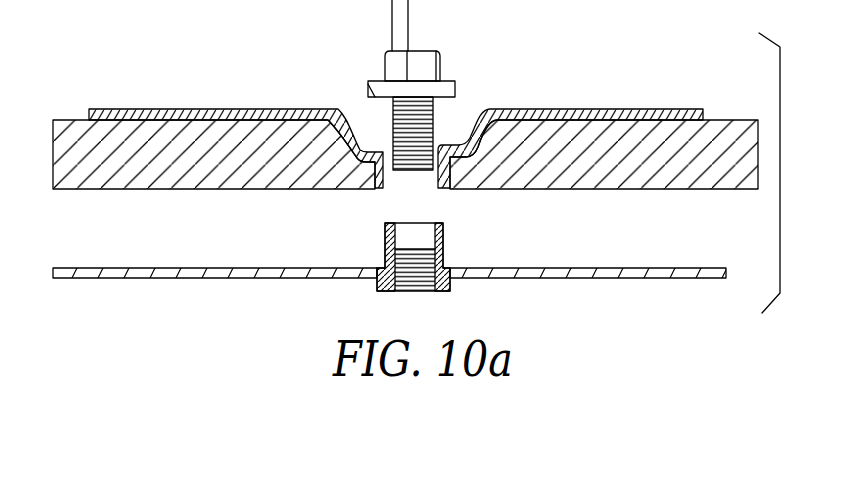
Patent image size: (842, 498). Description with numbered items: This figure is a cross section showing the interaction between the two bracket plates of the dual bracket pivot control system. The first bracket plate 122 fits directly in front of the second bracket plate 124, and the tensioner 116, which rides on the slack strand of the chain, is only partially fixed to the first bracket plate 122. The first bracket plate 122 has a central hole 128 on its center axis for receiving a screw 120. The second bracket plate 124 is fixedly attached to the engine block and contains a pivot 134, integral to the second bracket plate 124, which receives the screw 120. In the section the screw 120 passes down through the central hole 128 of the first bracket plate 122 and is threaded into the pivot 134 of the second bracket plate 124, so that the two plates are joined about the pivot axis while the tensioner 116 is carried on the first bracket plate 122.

The tensioner 116 is at (165, 130).
The screw 120 is at (430, 72).
The first bracket plate 122 is at (598, 117).
The second bracket plate 124 is at (627, 279).
The central hole 128 is at (348, 112).
The pivot 134 is at (443, 247).